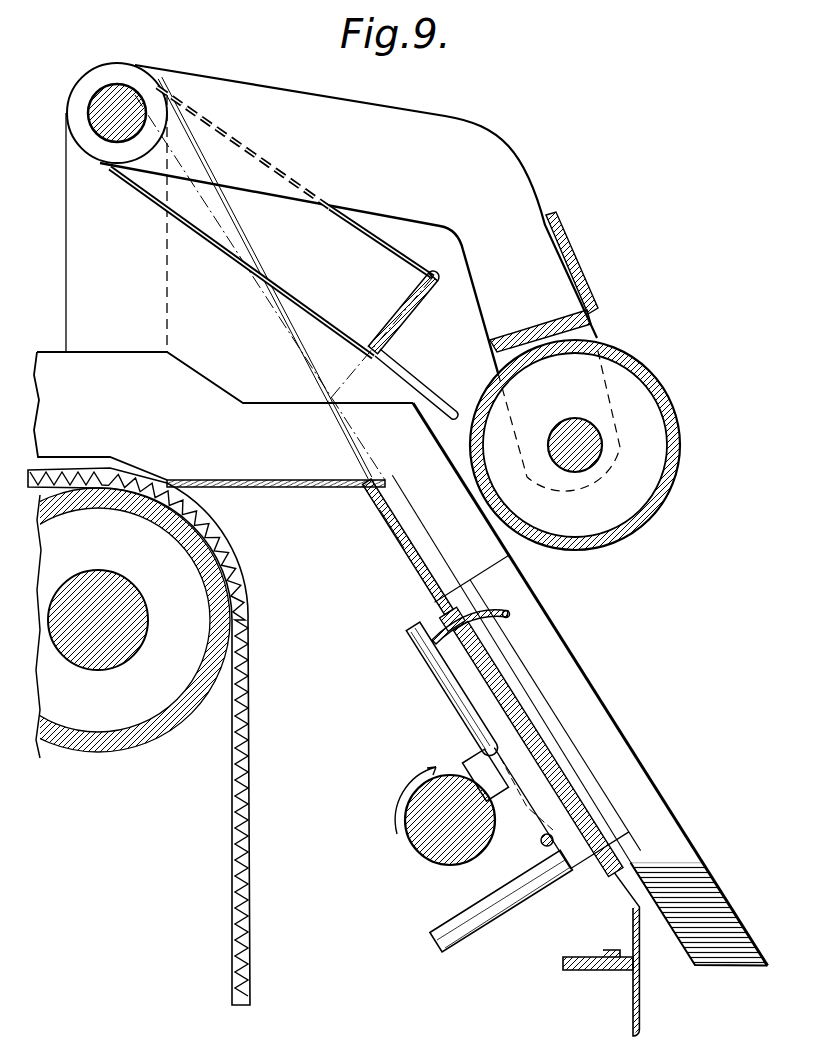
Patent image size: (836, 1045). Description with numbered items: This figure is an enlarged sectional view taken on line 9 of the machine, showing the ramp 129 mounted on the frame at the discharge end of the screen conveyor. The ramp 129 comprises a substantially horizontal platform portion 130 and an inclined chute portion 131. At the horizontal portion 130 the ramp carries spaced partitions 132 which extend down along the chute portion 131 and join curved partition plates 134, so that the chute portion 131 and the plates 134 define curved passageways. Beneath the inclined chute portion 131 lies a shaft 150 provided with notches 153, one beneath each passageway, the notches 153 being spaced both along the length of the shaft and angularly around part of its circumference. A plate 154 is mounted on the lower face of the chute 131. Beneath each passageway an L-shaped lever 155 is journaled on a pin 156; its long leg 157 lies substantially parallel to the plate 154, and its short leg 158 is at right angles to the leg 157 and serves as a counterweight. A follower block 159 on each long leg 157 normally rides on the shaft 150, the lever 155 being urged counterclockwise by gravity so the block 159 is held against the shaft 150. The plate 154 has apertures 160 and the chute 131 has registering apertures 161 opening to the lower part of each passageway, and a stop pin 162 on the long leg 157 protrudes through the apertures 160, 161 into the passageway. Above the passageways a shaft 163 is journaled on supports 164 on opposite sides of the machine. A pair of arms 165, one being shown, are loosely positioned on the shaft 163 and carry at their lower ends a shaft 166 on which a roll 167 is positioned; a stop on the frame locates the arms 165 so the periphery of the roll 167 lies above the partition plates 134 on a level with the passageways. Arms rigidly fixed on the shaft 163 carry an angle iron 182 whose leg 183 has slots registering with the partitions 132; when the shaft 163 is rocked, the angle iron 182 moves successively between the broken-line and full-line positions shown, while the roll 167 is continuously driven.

The section line 9— 9 is at (459, 755).
The ramp 129 is at (390, 548).
The horizontal platform portion 130 is at (276, 489).
The inclined chute portion 131 is at (426, 580).
The partitions 132 is at (212, 388).
The curved partition plates 134 is at (560, 648).
The shaft 150 is at (432, 842).
The notches 153 is at (456, 798).
The plate 154 is at (516, 732).
The lever 155 is at (514, 834).
The pin 156 is at (553, 838).
The long leg 157 is at (442, 685).
The short leg 158 is at (505, 905).
The follower block 159 is at (477, 763).
The apertures 160 is at (446, 600).
The registering apertures 161 is at (466, 618).
The stop pin 162 is at (505, 620).
The shaft 163 is at (110, 90).
The supports 164 is at (136, 283).
The arms 165 is at (400, 140).
The shaft 166 is at (592, 445).
The roll 167 is at (682, 418).
The angle iron 182 is at (408, 305).
The leg 183 is at (432, 356).